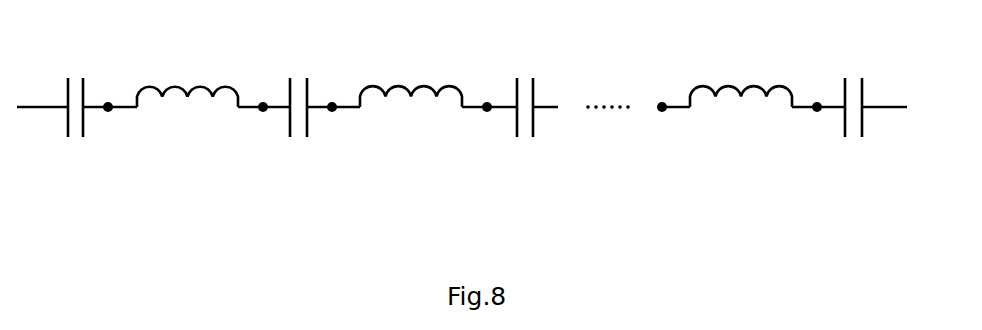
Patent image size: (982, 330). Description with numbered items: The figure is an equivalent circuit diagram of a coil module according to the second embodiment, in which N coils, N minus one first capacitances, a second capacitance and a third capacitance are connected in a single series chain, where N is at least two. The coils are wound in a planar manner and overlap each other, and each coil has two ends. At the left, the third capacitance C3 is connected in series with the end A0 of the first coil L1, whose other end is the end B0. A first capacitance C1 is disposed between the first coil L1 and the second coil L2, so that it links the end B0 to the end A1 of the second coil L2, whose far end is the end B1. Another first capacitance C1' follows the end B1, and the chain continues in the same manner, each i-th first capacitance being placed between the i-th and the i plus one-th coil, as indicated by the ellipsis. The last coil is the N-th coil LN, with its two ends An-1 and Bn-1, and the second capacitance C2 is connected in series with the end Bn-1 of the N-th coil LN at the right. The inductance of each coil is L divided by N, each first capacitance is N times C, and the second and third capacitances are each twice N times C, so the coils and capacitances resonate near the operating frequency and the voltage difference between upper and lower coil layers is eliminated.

The third capacitance C3 is at (77, 96).
The end A0 of the first coil A0 is at (105, 121).
The first coil L1 is at (187, 81).
The end B0 of the first coil B0 is at (262, 121).
The first capacitance C1 is at (298, 96).
The end A1 of the second coil A1 is at (330, 121).
The second coil L2 is at (411, 81).
The end B1 of the second coil B1 is at (492, 121).
The first capacitance C1' is at (528, 96).
The end An-1 of the n-th coil An-1 is at (667, 121).
The N-th coil LN is at (741, 81).
The end Bn-1 of the n-th coil Bn-1 is at (810, 121).
The second capacitance C2 is at (853, 96).